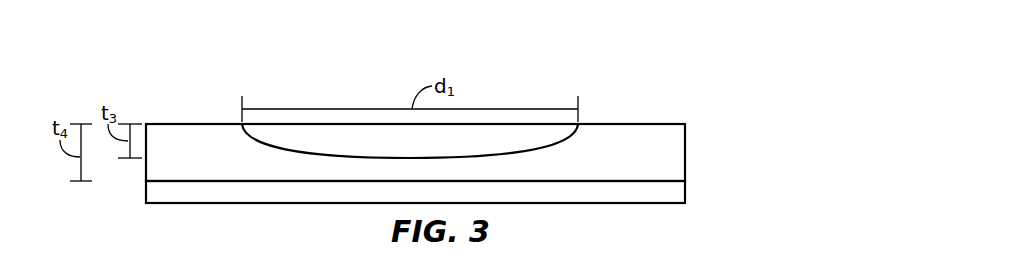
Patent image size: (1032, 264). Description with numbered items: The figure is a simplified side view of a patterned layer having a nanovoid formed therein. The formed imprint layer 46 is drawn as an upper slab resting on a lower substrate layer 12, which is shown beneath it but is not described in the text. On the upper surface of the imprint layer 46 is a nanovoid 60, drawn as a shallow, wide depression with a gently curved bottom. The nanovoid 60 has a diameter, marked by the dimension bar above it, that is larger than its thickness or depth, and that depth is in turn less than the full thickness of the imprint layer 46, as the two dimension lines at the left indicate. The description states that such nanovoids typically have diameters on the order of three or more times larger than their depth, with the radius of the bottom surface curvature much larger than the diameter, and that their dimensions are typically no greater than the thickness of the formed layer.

The formed imprint layer 46 is at (685, 147).
The base substrate layer 12 is at (685, 189).
The nanovoid 60 is at (581, 55).